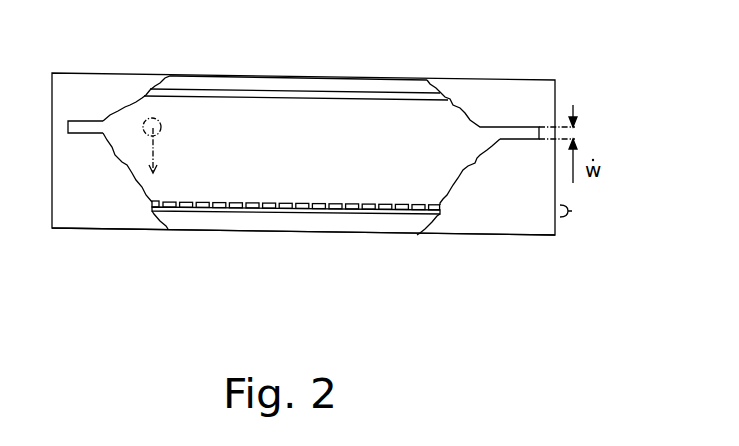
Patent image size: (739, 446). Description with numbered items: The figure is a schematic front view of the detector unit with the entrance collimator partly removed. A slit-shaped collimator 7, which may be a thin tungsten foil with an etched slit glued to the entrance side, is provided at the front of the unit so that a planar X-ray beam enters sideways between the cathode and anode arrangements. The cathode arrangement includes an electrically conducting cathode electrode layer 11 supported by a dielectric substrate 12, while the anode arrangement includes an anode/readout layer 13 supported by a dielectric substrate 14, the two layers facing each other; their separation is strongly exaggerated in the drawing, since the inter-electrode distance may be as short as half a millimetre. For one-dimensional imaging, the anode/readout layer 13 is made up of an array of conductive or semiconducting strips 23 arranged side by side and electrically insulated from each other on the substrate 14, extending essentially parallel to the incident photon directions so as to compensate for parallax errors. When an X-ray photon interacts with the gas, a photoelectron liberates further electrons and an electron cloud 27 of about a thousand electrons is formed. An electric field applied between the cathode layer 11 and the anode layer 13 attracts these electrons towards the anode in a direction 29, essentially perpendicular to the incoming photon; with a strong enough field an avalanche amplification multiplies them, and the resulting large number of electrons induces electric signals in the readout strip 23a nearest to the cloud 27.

The slit-shaped collimator 7 is at (475, 92).
The cathode electrode layer 11 is at (370, 102).
The dielectric substrate 12 is at (288, 75).
The anode/readout layer 13 is at (581, 213).
The dielectric substrate 14 is at (185, 229).
The anode/readout strips 23 is at (273, 203).
The readout strip nearest the cloud 23a is at (152, 203).
The electron cloud 27 is at (161, 126).
The direction of electron drift 29 is at (157, 147).